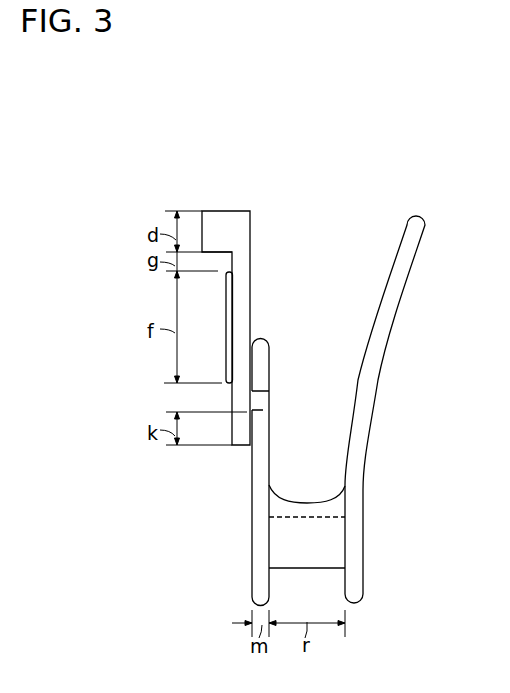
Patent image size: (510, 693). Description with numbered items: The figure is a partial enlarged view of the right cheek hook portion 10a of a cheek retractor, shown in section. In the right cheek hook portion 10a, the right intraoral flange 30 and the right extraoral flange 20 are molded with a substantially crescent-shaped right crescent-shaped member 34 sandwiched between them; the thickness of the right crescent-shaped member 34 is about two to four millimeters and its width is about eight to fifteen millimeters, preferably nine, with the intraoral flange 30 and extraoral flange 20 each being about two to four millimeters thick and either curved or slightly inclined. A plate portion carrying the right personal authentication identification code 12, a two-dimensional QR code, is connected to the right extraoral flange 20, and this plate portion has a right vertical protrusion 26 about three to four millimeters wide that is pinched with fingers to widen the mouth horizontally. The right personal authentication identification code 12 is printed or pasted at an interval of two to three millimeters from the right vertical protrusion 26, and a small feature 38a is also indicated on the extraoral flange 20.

The right cheek hook portion 10a is at (99, 171).
The right personal authentication identification code 12 is at (227, 357).
The right extraoral flange 20 is at (258, 344).
The right vertical protrusion 26 is at (213, 228).
The right intraoral flange 30 is at (407, 250).
The right crescent-shaped member 34 is at (327, 535).
The engagement notch 38a is at (262, 410).